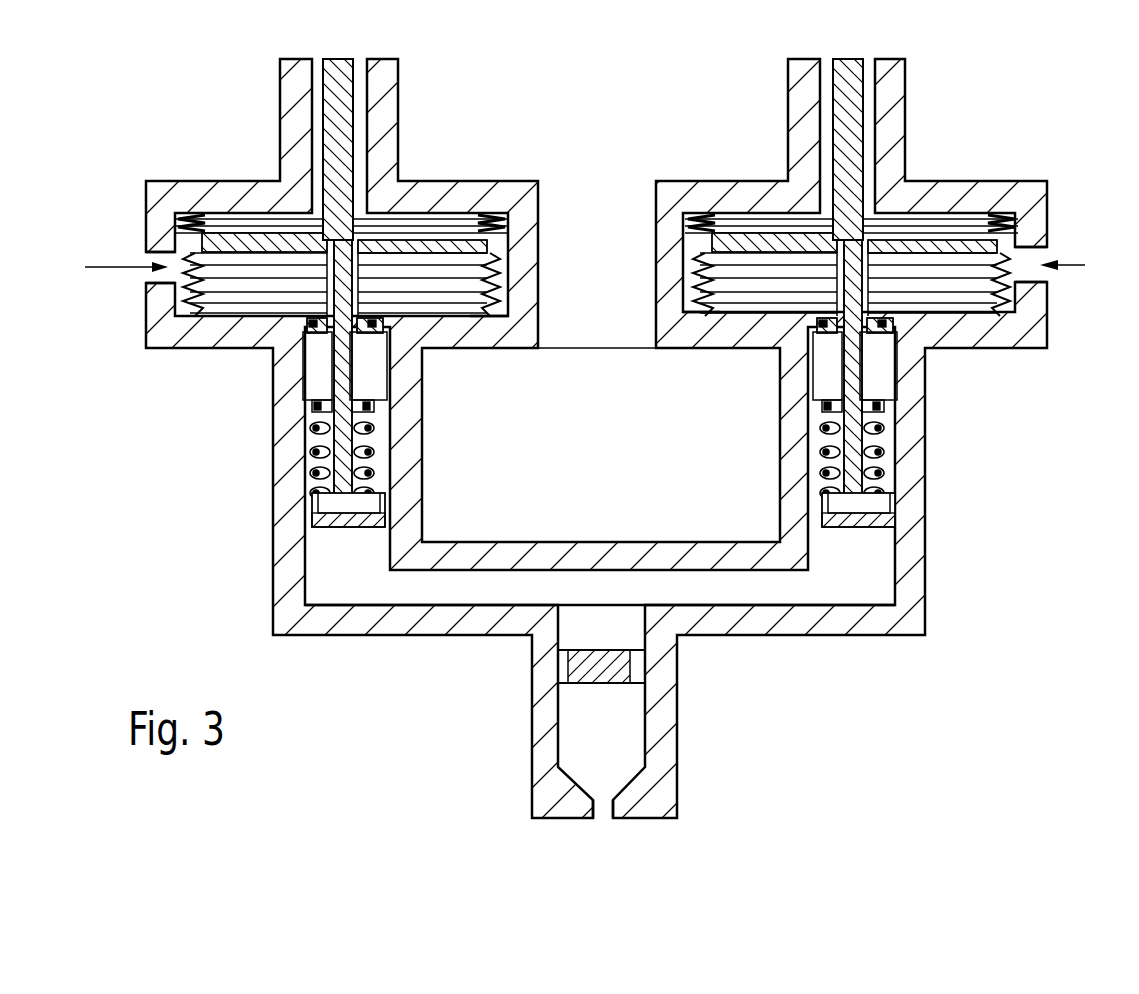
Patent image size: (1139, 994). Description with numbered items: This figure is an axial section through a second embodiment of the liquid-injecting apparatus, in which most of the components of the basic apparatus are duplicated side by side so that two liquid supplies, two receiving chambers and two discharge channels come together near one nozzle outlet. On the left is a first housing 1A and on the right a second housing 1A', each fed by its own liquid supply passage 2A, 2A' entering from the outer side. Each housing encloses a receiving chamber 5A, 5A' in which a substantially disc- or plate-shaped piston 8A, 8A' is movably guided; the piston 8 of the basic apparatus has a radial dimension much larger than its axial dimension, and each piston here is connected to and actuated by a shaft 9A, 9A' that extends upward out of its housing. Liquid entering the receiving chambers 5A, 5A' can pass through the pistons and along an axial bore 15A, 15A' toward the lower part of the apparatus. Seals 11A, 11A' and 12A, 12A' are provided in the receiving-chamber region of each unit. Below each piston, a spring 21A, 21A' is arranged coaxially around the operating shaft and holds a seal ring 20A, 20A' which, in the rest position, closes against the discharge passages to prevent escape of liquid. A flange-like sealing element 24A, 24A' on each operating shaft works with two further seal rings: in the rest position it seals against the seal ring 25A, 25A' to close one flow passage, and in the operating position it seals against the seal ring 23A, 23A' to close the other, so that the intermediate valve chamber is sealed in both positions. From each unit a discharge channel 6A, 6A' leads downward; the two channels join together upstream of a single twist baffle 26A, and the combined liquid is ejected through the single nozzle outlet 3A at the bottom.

The housing 1A is at (229, 155).
The housing 1A' is at (887, 153).
The liquid supply passage 2A is at (130, 237).
The liquid supply passage 2A' is at (1065, 242).
The nozzle outlet 3A is at (603, 810).
The receiving chamber 5A is at (387, 284).
The receiving chamber 5A' is at (886, 321).
The discharge channel 6A is at (452, 634).
The discharge channel 6A' is at (747, 634).
The piston 8 is at (423, 240).
The piston 8A is at (264, 180).
The piston 8A' is at (932, 194).
The shaft 9A is at (343, 264).
The shaft 9A' is at (900, 283).
The seal 11A is at (493, 358).
The seal 11A' is at (709, 349).
The seal 12A is at (352, 183).
The seal 12A' is at (848, 182).
The axial bore 15A is at (406, 410).
The axial bore 15A' is at (907, 392).
The seal ring 20A is at (303, 508).
The seal ring 20A' is at (903, 511).
The spring 21A is at (390, 460).
The spring 21A' is at (907, 460).
The seal ring 23A is at (277, 424).
The seal ring 23A' is at (919, 419).
The sealing element 24A is at (410, 359).
The sealing element 24A' is at (919, 359).
The seal ring 25A is at (277, 361).
The seal ring 25A' is at (785, 368).
The twist baffle 26A is at (607, 672).